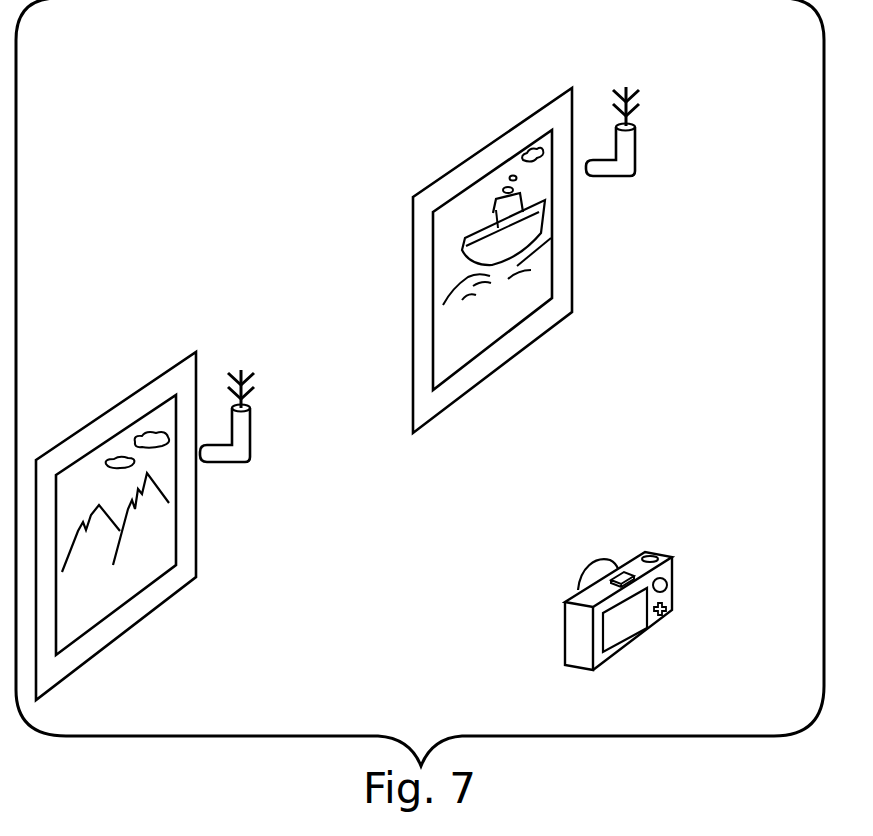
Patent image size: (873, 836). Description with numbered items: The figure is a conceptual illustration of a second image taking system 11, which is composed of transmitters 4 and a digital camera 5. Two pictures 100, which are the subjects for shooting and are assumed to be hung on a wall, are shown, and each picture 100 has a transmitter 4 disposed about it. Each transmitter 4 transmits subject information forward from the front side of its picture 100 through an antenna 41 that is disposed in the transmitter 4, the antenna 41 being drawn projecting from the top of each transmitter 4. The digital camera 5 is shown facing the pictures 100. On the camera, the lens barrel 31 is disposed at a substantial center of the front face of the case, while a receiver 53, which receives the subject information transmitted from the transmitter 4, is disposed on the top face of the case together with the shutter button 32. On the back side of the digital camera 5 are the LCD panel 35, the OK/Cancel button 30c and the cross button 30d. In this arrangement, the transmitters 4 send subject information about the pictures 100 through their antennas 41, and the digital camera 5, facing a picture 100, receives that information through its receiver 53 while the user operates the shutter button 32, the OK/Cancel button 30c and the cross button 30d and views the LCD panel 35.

The transmitter 4 is at (438, 237).
The antenna 41 is at (251, 395).
The picture 100 is at (118, 400).
The second image taking system 11 is at (709, 228).
The digital camera 5 is at (648, 567).
The lens barrel 31 is at (593, 567).
The receiver 53 is at (626, 572).
The shutter button 32 is at (654, 556).
The OK/Cancel button 30c is at (668, 585).
The cross button 30d is at (668, 603).
The LCD panel 35 is at (618, 622).